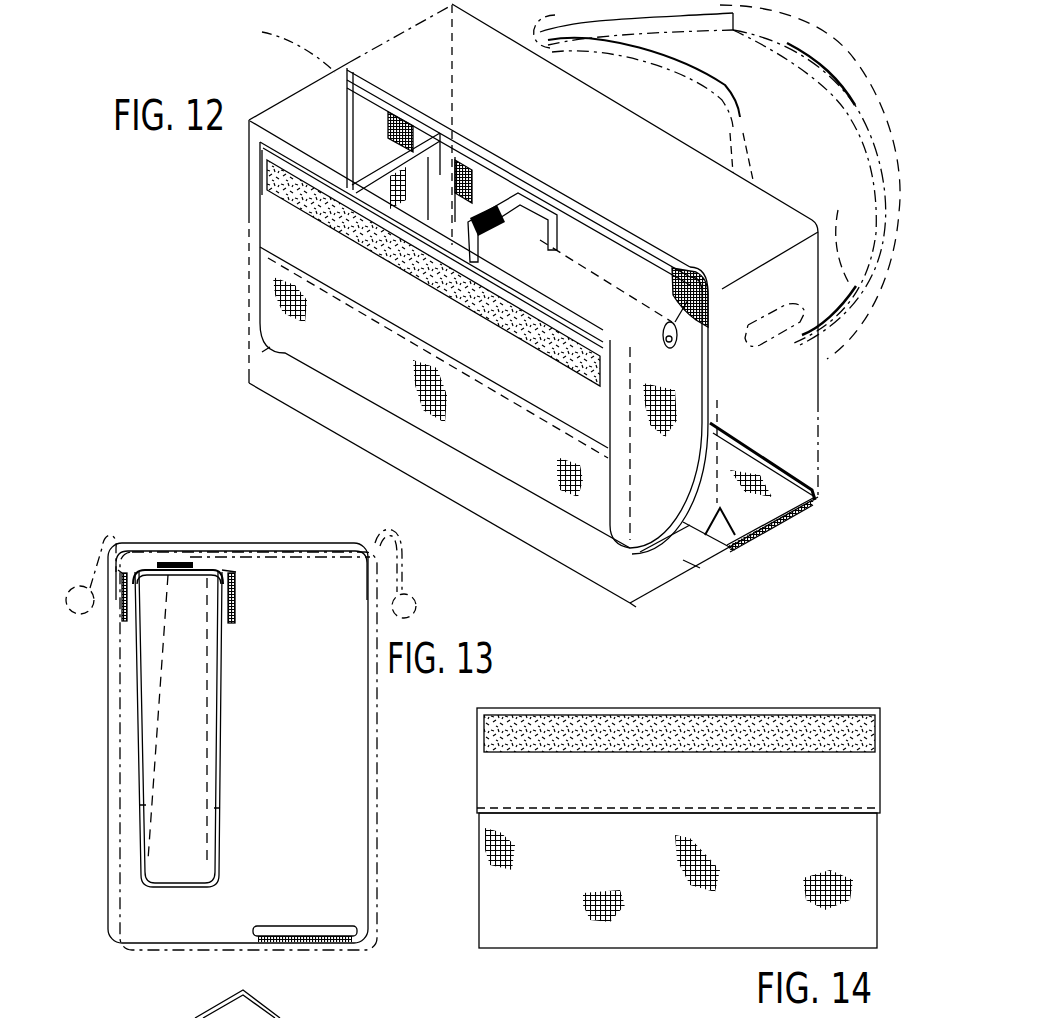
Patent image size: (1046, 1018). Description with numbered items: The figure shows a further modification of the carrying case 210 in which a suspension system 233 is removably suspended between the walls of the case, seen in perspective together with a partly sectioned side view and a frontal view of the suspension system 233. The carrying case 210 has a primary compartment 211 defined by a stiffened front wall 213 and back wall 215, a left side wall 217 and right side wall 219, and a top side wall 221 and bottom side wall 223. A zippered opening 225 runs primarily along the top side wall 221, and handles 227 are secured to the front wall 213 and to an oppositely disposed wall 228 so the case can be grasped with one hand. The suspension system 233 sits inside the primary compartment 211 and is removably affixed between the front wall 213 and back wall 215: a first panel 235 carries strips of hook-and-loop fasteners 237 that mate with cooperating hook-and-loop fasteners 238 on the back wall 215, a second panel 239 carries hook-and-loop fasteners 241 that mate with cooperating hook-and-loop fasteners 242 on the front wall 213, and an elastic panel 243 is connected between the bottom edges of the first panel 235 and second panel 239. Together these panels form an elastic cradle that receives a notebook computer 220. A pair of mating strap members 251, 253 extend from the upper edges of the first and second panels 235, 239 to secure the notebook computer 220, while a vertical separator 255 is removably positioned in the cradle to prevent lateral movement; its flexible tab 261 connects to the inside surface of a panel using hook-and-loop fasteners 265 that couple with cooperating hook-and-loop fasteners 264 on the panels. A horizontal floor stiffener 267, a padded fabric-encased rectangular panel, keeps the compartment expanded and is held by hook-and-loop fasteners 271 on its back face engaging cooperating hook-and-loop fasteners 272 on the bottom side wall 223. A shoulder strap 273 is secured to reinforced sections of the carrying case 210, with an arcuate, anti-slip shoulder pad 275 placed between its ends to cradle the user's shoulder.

In FIG. 12, the carrying case 210 is at (238, 404).
In FIG. 12, the primary compartment 211 is at (277, 95).
In FIG. 13, the primary compartment 211 is at (207, 930).
In FIG. 12, the front wall 213 is at (265, 352).
In FIG. 13, the front wall 213 is at (110, 863).
In FIG. 12, the back wall 215 is at (718, 412).
In FIG. 12, the left side wall 217 is at (247, 222).
In FIG. 12, the right side wall 219 is at (685, 560).
In FIG. 13, the notebook computer 220 is at (145, 792).
In FIG. 12, the top side wall 221 is at (286, 37).
In FIG. 13, the top side wall 221 is at (153, 545).
In FIG. 12, the bottom side wall 223 is at (633, 605).
In FIG. 13, the bottom side wall 223 is at (150, 953).
In FIG. 12, the zippered opening 225 is at (690, 328).
In FIG. 12, the handles 227 is at (740, 110).
In FIG. 13, the handles 227 is at (70, 612).
In FIG. 12, the oppositely disposed wall 228 is at (808, 345).
In FIG. 13, the oppositely disposed wall 228 is at (357, 746).
In FIG. 12, the suspension system 233 is at (260, 172).
In FIG. 12, the first panel 235 is at (572, 232).
In FIG. 13, the first panel 235 is at (222, 680).
In FIG. 12, the hook-and-loop fasteners 237 is at (680, 280).
In FIG. 13, the hook-and-loop fasteners 237 is at (232, 570).
In FIG. 12, the hook-and-loop fasteners 238 is at (722, 300).
In FIG. 13, the hook-and-loop fasteners 238 is at (238, 602).
In FIG. 12, the second panel 239 is at (290, 250).
In FIG. 13, the second panel 239 is at (135, 676).
In FIG. 14, the second panel 239 is at (495, 770).
In FIG. 12, the hook-and-loop fasteners 241 is at (420, 270).
In FIG. 13, the hook-and-loop fasteners 241 is at (130, 575).
In FIG. 14, the hook-and-loop fasteners 241 is at (495, 728).
In FIG. 12, the hook-and-loop fasteners 242 is at (347, 70).
In FIG. 13, the hook-and-loop fasteners 242 is at (120, 572).
In FIG. 12, the elastic panel 243 is at (405, 400).
In FIG. 13, the elastic panel 243 is at (143, 810).
In FIG. 14, the elastic panel 243 is at (673, 940).
In FIG. 12, the strap member 251 is at (500, 252).
In FIG. 13, the strap member 251 is at (147, 565).
In FIG. 12, the strap member 253 is at (505, 195).
In FIG. 13, the strap member 253 is at (187, 568).
In FIG. 12, the vertical separator 255 is at (372, 170).
In FIG. 12, the flexible tab 261 is at (445, 158).
In FIG. 12, the hook-and-loop fasteners 264 is at (405, 128).
In FIG. 13, the hook-and-loop fasteners 265 is at (302, 1014).
In FIG. 12, the horizontal floor stiffener 267 is at (790, 465).
In FIG. 13, the horizontal floor stiffener 267 is at (330, 920).
In FIG. 12, the hook-and-loop fasteners 271 is at (770, 523).
In FIG. 12, the hook-and-loop fasteners 272 is at (735, 542).
In FIG. 12, the shoulder strap 273 is at (858, 245).
In FIG. 12, the shoulder pad 275 is at (815, 35).